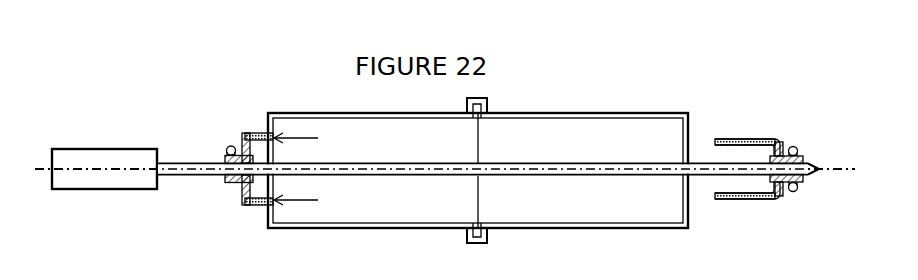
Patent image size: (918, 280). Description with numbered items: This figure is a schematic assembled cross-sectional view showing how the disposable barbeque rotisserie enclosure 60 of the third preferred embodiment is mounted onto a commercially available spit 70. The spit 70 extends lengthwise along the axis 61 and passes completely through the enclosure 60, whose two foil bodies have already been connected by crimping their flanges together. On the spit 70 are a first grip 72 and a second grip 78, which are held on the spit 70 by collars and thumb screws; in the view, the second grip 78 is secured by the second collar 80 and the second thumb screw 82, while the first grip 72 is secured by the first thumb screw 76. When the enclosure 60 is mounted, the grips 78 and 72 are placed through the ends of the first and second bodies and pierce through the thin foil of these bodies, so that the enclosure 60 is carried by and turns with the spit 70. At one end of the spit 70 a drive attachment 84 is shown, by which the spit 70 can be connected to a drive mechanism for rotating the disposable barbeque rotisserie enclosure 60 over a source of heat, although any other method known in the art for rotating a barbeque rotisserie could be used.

The disposable barbeque rotisserie enclosure 60 is at (278, 79).
The longitudinal axis 61 is at (43, 171).
The spit 70 is at (172, 163).
The first grip 72 is at (762, 139).
The first thumb screw 76 is at (794, 147).
The second grip 78 is at (245, 205).
The second collar 80 is at (222, 185).
The second thumb screw 82 is at (228, 146).
The drive attachment 84 is at (80, 190).